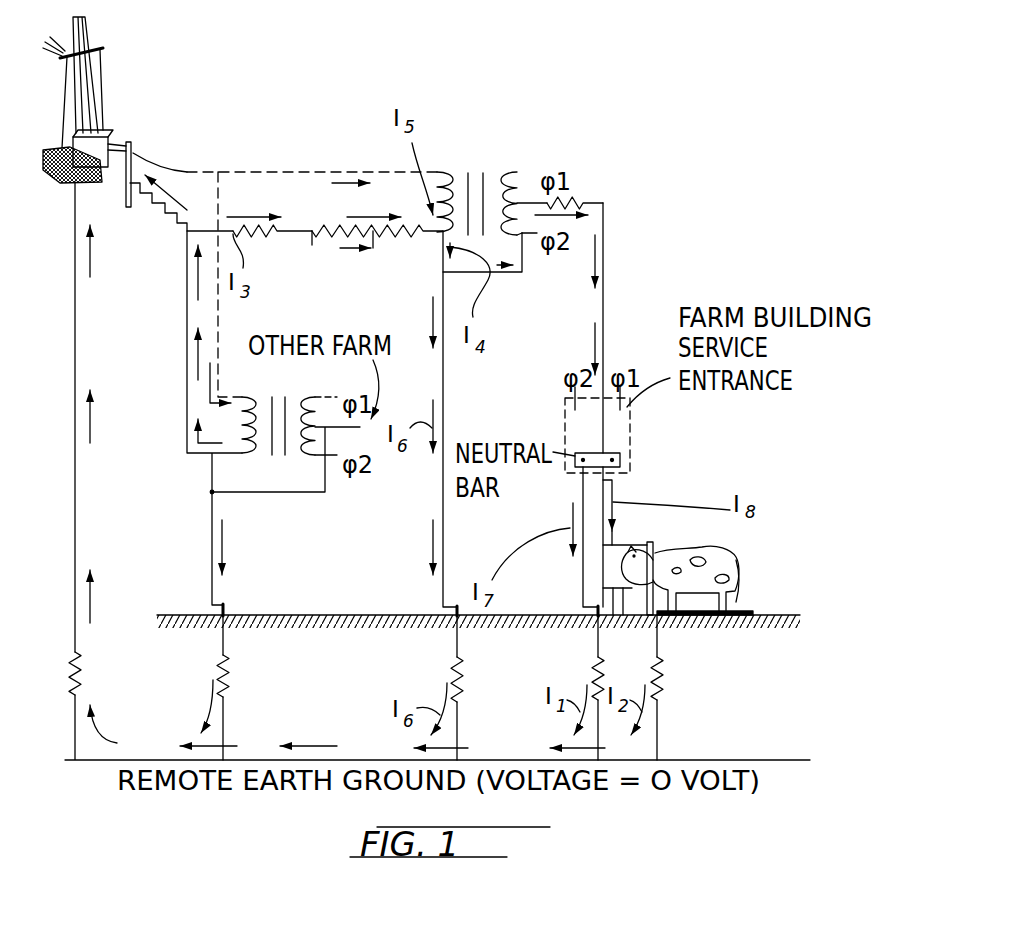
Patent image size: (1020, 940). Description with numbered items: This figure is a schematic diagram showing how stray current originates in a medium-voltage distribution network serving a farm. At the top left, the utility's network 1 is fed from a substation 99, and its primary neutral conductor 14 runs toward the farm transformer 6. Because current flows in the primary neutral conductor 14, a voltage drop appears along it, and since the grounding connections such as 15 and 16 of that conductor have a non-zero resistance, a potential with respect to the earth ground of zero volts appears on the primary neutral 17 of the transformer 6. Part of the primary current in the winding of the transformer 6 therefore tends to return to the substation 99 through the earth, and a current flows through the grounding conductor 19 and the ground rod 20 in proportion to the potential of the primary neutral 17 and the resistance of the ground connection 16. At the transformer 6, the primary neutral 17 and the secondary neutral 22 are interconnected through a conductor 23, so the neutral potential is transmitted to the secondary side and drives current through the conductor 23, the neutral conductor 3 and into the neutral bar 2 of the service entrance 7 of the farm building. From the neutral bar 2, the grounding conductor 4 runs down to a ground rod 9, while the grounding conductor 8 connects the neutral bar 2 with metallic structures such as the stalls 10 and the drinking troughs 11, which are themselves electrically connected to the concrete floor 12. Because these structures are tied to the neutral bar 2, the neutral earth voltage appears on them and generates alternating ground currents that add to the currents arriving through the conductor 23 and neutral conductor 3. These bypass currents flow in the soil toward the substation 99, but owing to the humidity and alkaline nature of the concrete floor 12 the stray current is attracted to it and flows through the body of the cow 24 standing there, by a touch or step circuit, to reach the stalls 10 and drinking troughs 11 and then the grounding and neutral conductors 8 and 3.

The substation 99 is at (105, 38).
The utility's network 1 is at (129, 134).
The primary neutral conductor 14 is at (302, 229).
The grounding connection 15 is at (310, 246).
The primary neutral 17 is at (436, 241).
The farm transformer 6 is at (492, 166).
The secondary neutral 22 is at (522, 196).
The neutral conductor 3 is at (603, 290).
The conductor 23 is at (507, 275).
The grounding conductor 19 is at (442, 490).
The service entrance 7 is at (630, 433).
The neutral bar 2 is at (620, 455).
The grounding conductor 4 is at (582, 567).
The grounding conductor 8 is at (612, 487).
The drinking troughs 11 is at (613, 623).
The stalls 10 is at (665, 622).
The cow 24 is at (723, 573).
The concrete floor 12 is at (750, 617).
The grounding connection 16 is at (444, 629).
The ground rod 20 is at (462, 628).
The ground rod 9 is at (590, 625).